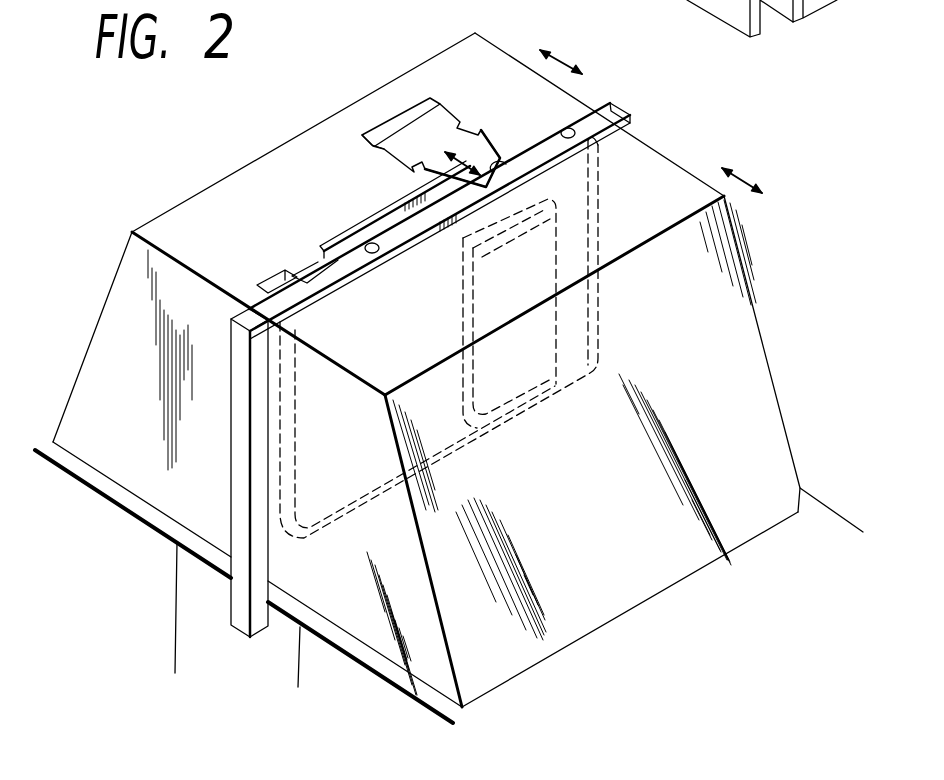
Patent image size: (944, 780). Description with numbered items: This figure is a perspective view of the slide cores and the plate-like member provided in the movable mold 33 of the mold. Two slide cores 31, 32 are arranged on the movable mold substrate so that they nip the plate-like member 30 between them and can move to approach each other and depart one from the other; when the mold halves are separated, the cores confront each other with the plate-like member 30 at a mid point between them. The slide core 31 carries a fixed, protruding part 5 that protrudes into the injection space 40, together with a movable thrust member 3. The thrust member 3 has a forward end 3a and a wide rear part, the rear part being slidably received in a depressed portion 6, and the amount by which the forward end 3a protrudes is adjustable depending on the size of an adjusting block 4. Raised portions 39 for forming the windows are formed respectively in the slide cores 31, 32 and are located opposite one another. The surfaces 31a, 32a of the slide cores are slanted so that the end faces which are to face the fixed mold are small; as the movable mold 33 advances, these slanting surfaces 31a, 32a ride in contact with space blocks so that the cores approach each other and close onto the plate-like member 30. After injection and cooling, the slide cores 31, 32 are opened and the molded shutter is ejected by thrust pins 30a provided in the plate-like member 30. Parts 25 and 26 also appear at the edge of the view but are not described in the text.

The thrust member 3 is at (447, 128).
The forward end 3a is at (504, 170).
The adjusting block 4 is at (400, 122).
The fixed, protruding part 5 is at (320, 268).
The depressed portion 6 is at (363, 140).
The frame member 25 is at (803, 8).
The frame member 26 is at (709, 18).
The plate-like member 30 is at (610, 103).
The thrust pins 30a is at (566, 127).
The slide core 31 is at (497, 66).
The slanting surface 31a is at (98, 309).
The slide core 32 is at (673, 177).
The slanting surface 32a is at (745, 337).
The movable mold 33 is at (150, 552).
The raised portions 39 is at (562, 272).
The injection space 40 is at (368, 220).